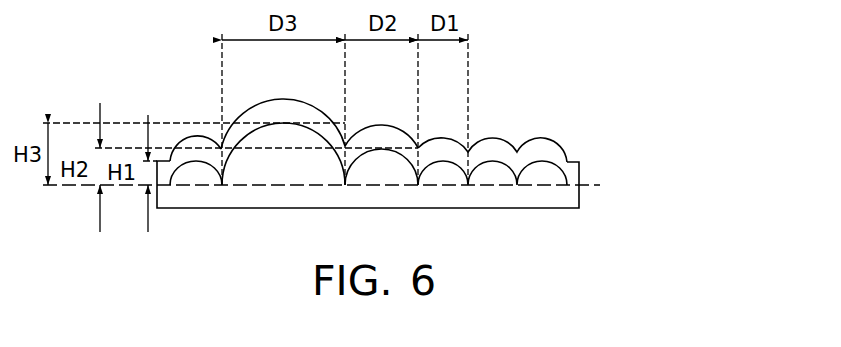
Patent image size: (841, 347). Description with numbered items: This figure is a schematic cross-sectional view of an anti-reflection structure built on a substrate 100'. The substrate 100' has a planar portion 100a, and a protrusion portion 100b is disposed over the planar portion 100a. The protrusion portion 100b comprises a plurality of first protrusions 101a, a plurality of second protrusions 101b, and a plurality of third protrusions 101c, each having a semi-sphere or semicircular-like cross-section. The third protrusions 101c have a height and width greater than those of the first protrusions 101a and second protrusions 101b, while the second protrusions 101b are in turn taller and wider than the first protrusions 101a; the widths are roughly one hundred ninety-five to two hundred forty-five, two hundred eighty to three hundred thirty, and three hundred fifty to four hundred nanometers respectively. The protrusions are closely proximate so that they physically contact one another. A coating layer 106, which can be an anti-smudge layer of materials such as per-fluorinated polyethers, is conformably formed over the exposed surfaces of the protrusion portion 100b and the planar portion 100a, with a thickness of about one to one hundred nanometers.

The substrate 100' is at (446, 185).
The planar portion 100a is at (595, 185).
The protrusion portion 100b is at (588, 123).
The first protrusions 101a is at (200, 168).
The second protrusions 101b is at (389, 163).
The third protrusions 101c is at (294, 142).
The coating layer 106 is at (542, 136).